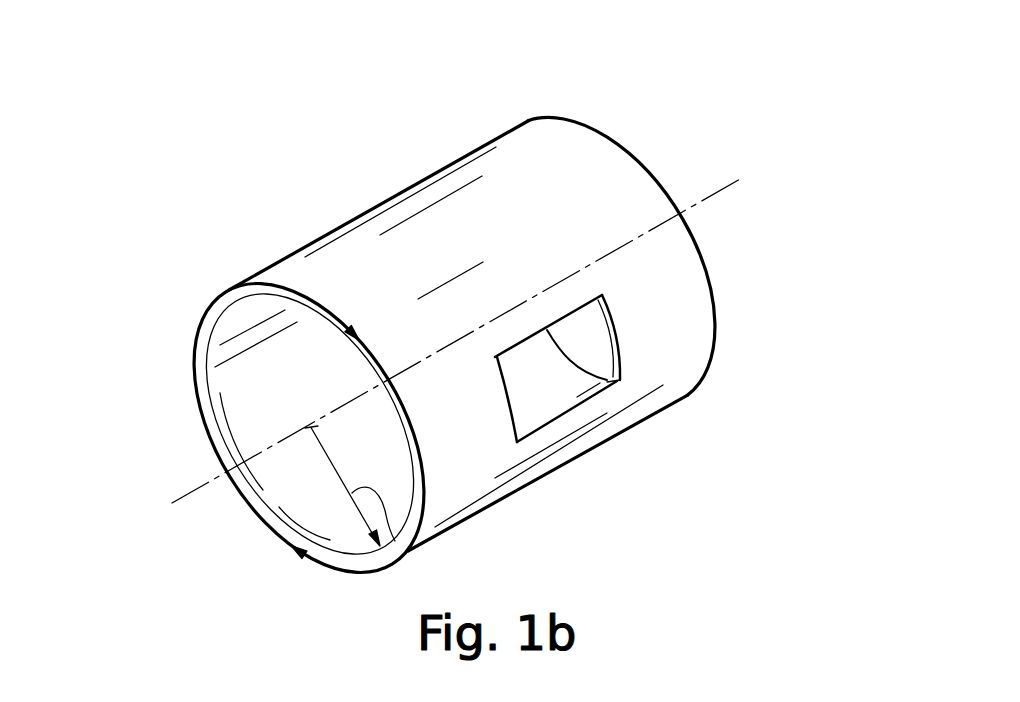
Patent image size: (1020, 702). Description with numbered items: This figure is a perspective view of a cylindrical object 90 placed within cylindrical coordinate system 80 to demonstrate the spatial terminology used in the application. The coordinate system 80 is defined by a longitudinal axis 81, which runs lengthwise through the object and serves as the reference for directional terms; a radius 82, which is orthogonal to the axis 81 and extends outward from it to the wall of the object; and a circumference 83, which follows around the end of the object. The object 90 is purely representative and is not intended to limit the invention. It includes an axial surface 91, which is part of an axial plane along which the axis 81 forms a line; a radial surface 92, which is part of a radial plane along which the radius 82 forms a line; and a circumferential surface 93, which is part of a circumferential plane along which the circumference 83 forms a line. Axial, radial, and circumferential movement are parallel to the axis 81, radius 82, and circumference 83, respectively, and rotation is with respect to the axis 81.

The cylindrical coordinate system 80 is at (636, 130).
The longitudinal axis 81 is at (183, 499).
The radius 82 is at (410, 545).
The circumference 83 is at (205, 314).
The cylindrical object 90 is at (490, 123).
The axial surface 91 is at (587, 388).
The radial surface 92 is at (321, 562).
The circumferential surface 93 is at (427, 228).